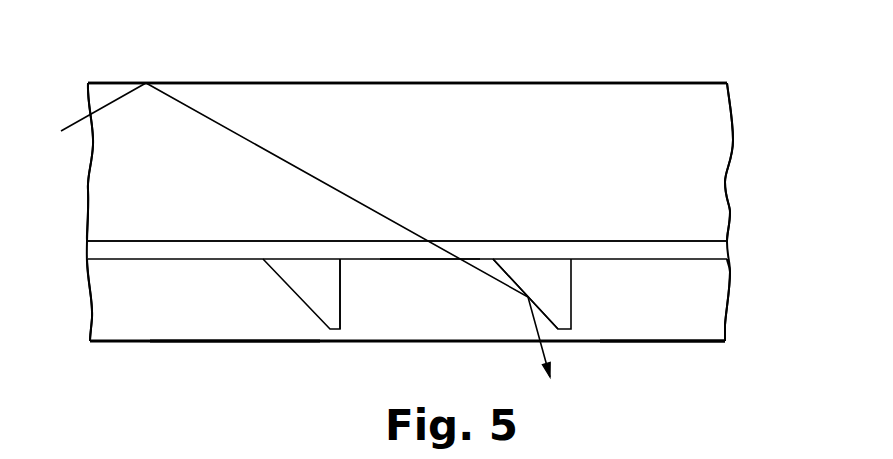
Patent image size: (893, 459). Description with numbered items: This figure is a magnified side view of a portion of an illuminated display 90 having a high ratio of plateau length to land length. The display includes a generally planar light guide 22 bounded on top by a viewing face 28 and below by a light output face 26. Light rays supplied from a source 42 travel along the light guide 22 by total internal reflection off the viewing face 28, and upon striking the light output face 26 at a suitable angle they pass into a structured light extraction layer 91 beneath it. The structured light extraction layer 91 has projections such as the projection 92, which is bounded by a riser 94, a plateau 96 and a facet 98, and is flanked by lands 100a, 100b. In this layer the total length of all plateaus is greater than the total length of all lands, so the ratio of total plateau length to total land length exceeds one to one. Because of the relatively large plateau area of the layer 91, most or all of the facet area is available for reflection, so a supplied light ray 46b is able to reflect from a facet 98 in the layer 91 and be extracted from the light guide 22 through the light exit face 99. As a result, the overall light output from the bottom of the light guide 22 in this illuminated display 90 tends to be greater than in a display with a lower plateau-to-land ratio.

The illuminated display 90 is at (624, 68).
The viewing face 28 is at (585, 84).
The light guide 22 is at (693, 157).
The source 42 is at (710, 250).
The light output face 26 is at (617, 240).
The projection 92 is at (478, 325).
The light exit face 99 is at (232, 342).
The structured light extraction layer 91 is at (688, 325).
The plateau 96 is at (428, 259).
The land 100a is at (330, 328).
The land 100b is at (565, 328).
The riser 94 is at (340, 302).
The facet 98 is at (512, 278).
The supplied light ray 46b is at (447, 249).